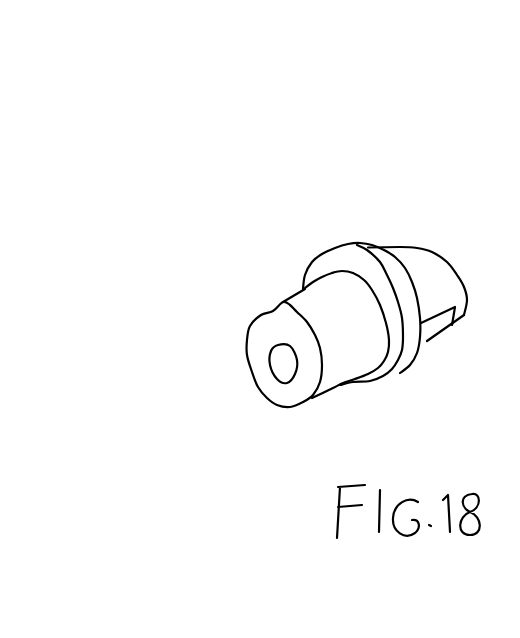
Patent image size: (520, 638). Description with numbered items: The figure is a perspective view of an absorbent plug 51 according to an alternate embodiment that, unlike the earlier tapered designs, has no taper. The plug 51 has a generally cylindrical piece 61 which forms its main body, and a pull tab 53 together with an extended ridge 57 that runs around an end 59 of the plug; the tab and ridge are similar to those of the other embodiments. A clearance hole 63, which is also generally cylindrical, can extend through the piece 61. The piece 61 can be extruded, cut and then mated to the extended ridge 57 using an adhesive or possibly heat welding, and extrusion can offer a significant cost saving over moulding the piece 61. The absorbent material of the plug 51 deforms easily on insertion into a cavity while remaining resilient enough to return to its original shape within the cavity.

The absorbent plug 51 is at (288, 344).
The pull tab 53 is at (433, 272).
The extended ridge 57 is at (358, 252).
The end 59 is at (379, 355).
The generally cylindrical piece 61 is at (283, 300).
The clearance hole 63 is at (278, 384).